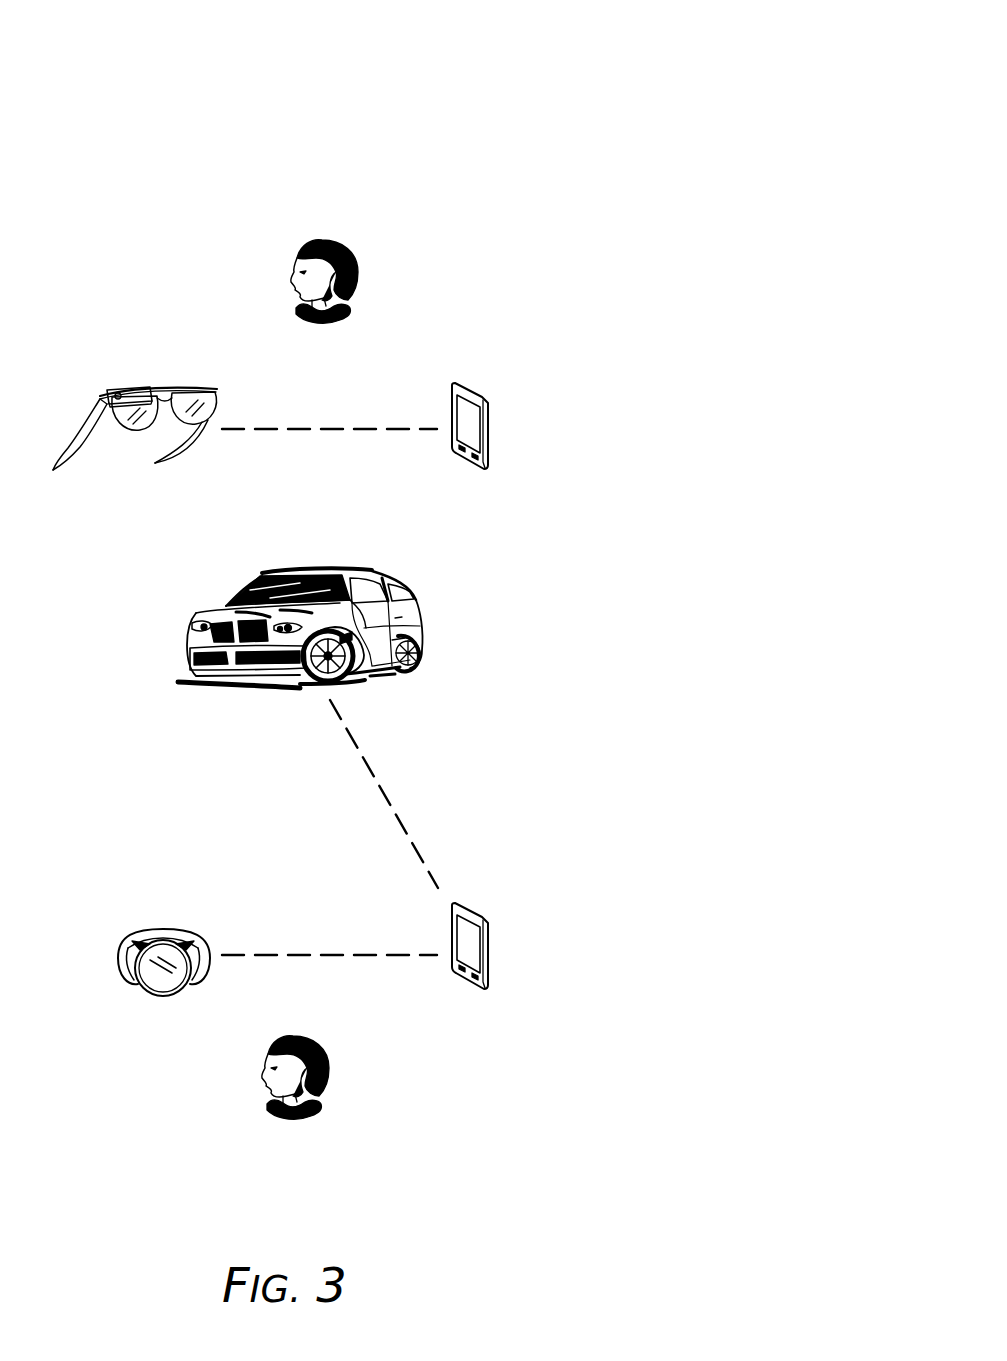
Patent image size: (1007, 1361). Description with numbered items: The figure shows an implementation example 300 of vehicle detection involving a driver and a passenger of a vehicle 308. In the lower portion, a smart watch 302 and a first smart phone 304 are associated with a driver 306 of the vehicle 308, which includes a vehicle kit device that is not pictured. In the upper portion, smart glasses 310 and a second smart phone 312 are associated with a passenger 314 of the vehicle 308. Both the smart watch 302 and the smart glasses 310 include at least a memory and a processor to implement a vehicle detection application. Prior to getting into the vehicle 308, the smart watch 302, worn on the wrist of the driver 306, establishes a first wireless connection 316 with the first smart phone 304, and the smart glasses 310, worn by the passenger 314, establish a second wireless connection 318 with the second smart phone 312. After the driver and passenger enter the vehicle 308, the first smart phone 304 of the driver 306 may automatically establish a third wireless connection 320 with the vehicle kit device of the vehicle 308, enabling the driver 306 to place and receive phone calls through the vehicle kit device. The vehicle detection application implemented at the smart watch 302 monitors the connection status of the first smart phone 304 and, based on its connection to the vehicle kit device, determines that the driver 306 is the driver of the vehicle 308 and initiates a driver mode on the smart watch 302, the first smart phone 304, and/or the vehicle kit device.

The implementation example 300 is at (585, 64).
The smart watch 302 is at (127, 929).
The first smart phone 304 is at (490, 925).
The driver 306 is at (307, 1039).
The vehicle 308 is at (418, 631).
The smart glasses 310 is at (175, 391).
The second smart phone 312 is at (490, 402).
The passenger 314 is at (337, 244).
The first wireless connection 316 is at (310, 955).
The second wireless connection 318 is at (307, 428).
The third wireless connection 320 is at (387, 797).